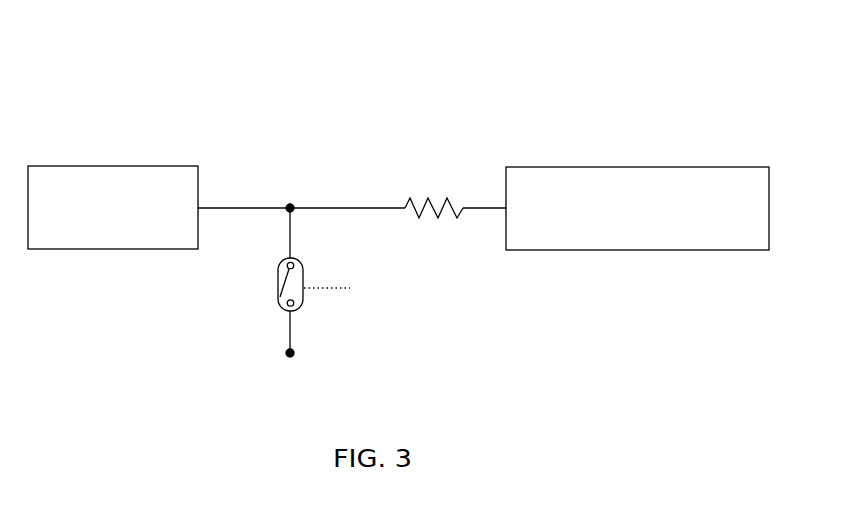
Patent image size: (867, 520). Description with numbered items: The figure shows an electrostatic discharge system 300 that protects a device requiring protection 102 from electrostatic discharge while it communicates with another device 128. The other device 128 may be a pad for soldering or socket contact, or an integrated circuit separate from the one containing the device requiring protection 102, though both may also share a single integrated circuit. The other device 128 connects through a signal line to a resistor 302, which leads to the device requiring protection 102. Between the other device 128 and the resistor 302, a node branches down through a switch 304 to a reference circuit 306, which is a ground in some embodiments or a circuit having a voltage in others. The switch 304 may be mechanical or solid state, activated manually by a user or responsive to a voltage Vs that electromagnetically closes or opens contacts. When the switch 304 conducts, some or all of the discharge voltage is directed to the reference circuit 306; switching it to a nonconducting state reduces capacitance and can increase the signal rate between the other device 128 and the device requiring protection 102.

The electrostatic discharge system 300 is at (452, 82).
The other device 128 is at (157, 166).
The device requiring protection 102 is at (548, 167).
The resistor 302 is at (406, 205).
The switch 304 is at (278, 291).
The reference circuit 306 is at (293, 351).